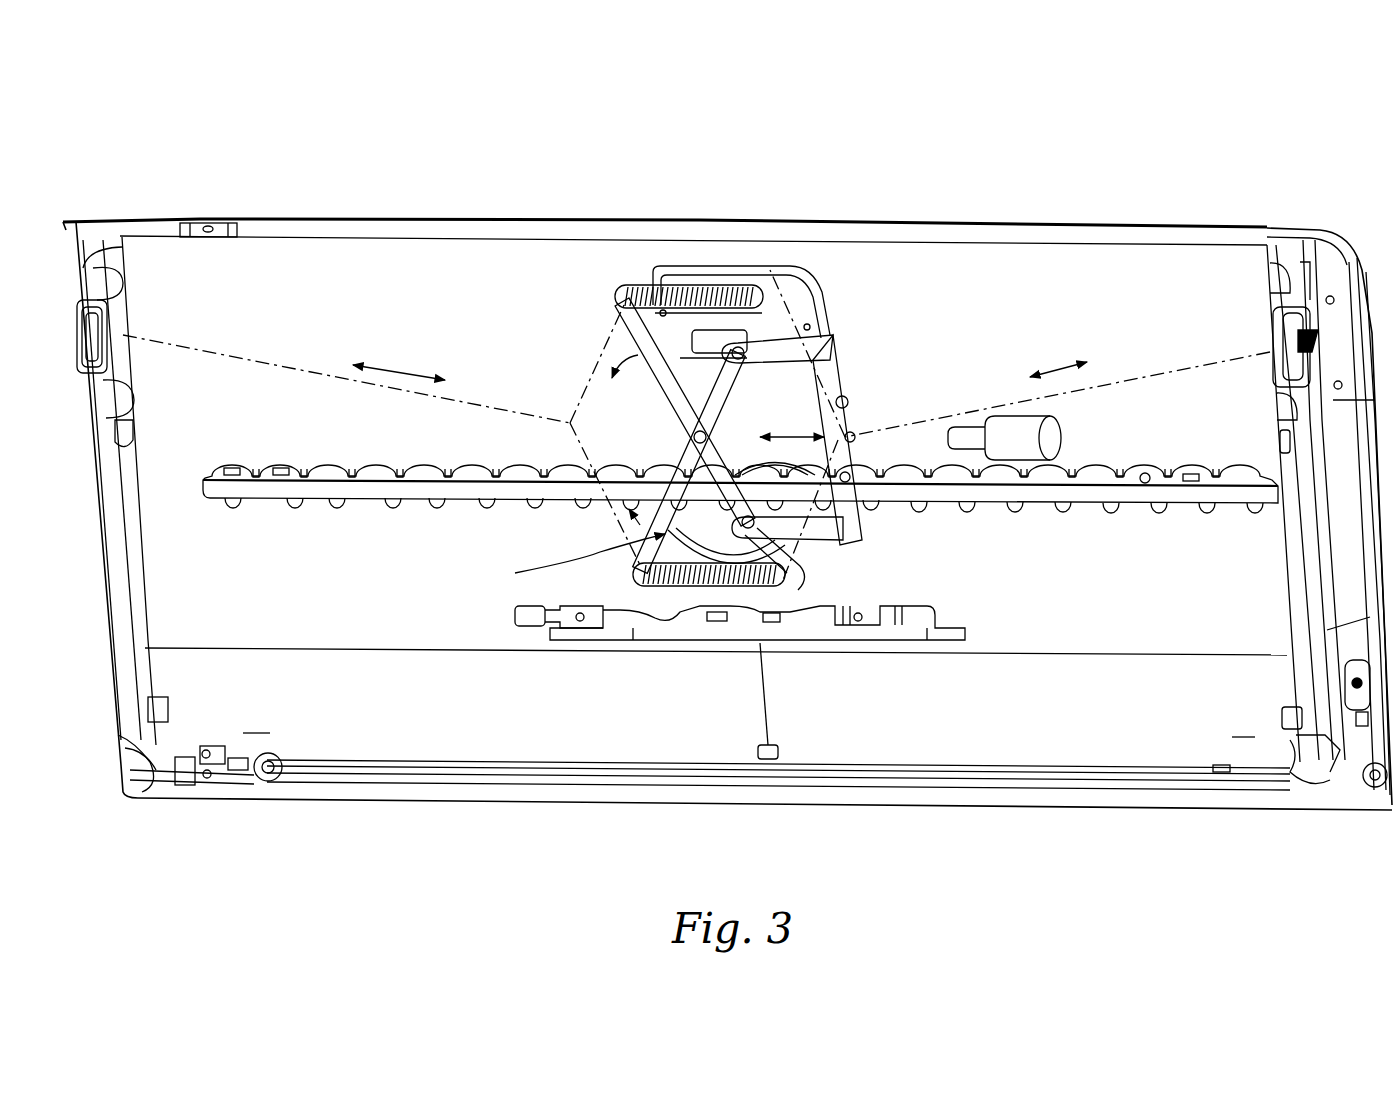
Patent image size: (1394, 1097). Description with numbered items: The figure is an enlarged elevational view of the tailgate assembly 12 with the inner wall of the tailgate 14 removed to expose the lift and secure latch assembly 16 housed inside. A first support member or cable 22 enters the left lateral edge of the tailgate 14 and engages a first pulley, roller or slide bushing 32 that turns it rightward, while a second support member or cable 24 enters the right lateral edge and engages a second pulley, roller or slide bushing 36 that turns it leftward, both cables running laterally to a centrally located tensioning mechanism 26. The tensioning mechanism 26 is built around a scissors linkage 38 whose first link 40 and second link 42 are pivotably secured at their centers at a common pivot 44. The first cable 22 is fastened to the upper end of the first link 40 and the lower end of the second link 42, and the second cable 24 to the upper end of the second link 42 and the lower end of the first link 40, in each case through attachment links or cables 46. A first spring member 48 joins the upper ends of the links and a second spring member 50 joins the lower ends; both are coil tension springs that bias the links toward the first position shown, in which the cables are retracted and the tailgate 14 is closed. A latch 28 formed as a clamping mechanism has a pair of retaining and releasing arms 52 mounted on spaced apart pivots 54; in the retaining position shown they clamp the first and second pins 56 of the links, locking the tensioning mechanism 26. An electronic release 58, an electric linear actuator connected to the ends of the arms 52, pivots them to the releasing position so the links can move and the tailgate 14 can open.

The tailgate assembly 12 is at (1065, 222).
The tailgate 14 is at (990, 222).
The lift and secure latch assembly 16 is at (598, 272).
The first support member or cable 22 is at (307, 374).
The second support member or cable 24 is at (1152, 373).
The tensioning mechanism 26 is at (805, 300).
The latch 28 is at (827, 328).
The first pulley, roller or slide bushing 32 is at (123, 335).
The second pulley, roller or slide bushing 36 is at (1306, 348).
The scissors linkage 38 is at (628, 572).
The first link 40 is at (623, 286).
The second link 42 is at (770, 305).
The common pivot 44 is at (694, 437).
The attachment links or cables 46 is at (580, 400).
The first spring member 48 is at (740, 286).
The second spring member 50 is at (697, 590).
The retaining and releasing arms 52 is at (832, 355).
The pivots 54 is at (857, 403).
The first and second pins 56 is at (779, 292).
The electronic release 58 is at (1065, 445).